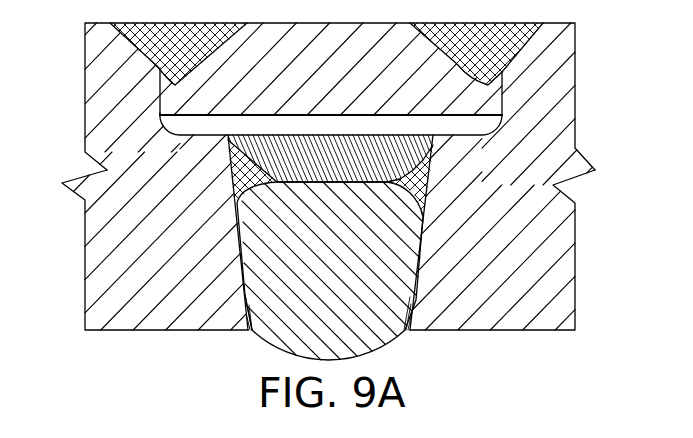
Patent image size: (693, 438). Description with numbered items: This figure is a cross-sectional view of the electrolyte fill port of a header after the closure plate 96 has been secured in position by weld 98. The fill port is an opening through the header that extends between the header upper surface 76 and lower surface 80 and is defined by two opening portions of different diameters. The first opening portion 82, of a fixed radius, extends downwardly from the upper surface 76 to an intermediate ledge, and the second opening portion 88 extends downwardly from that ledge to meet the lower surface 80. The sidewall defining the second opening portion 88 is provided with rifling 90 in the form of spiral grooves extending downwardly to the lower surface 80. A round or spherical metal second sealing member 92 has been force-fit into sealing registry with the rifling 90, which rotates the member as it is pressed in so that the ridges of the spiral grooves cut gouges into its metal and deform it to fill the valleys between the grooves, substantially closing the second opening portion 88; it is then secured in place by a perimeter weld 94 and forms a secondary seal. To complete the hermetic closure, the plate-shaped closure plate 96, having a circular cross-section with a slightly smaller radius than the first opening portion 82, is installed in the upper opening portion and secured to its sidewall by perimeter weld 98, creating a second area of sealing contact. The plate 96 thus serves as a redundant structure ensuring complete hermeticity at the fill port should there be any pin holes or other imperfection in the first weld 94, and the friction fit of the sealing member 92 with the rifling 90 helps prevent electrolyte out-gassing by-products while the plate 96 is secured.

The upper surface 76 is at (557, 23).
The lower surface 80 is at (542, 331).
The first opening portion 82 is at (173, 123).
The second opening portion 88 is at (408, 332).
The rifling 90 is at (400, 145).
The second sealing member 92 is at (283, 328).
The perimeter weld 94 is at (230, 181).
The closure plate 96 is at (173, 97).
The weld 98 is at (138, 50).